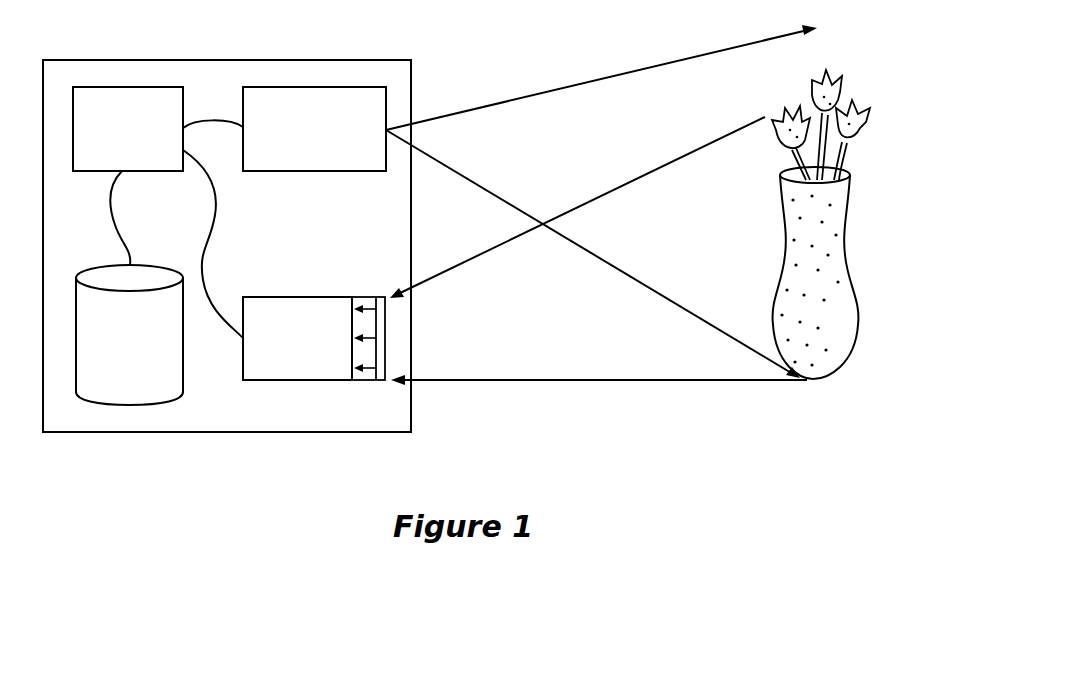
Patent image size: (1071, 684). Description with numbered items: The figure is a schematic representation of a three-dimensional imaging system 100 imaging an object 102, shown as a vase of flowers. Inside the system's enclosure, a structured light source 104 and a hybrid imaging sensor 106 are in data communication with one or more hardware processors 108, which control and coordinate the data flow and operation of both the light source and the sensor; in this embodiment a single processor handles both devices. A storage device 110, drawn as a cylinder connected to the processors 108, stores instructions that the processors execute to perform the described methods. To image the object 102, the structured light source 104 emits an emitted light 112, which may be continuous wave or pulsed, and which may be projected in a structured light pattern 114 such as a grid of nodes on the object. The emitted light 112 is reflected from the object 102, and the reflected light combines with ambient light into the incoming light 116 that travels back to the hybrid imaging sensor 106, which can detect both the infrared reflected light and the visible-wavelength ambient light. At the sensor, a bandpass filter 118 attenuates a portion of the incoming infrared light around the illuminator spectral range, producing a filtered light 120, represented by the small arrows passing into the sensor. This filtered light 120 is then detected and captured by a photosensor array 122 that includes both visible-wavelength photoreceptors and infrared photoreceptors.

The 3D imaging system 100 is at (459, 71).
The object 102 is at (855, 237).
The structured light source 104 is at (314, 129).
The hybrid imaging sensor 106 is at (297, 338).
The hardware processors 108 is at (128, 129).
The storage device 110 is at (129, 335).
The emitted light 112 is at (634, 68).
The structured light pattern 114 is at (770, 245).
The incoming light 116 is at (611, 382).
The bandpass filter 118 is at (381, 383).
The filtered light 120 is at (366, 381).
The photosensor array 122 is at (364, 297).